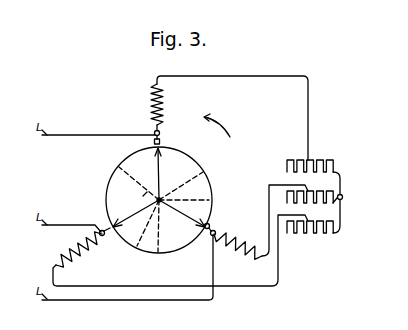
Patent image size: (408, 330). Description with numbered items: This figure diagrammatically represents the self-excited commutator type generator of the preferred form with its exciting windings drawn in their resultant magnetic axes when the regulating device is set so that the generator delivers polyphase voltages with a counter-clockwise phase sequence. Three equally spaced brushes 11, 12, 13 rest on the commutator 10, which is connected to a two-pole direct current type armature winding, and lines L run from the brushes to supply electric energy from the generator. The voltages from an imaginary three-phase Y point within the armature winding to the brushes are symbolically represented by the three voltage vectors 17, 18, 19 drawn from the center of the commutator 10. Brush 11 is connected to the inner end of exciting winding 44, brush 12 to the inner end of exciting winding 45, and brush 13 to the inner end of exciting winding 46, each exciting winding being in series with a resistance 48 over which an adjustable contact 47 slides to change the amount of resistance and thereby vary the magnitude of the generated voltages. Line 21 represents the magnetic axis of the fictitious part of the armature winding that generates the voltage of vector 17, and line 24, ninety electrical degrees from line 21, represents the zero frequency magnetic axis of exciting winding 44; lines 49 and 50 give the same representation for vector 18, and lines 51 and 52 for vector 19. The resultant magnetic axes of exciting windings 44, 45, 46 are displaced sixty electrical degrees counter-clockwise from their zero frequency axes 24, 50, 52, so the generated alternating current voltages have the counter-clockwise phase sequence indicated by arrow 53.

The commutator 10 is at (107, 194).
The brush 11 is at (160, 142).
The brush 12 is at (209, 226).
The brush 13 is at (104, 237).
The voltage vector 17 is at (159, 167).
The voltage vector 18 is at (141, 217).
The voltage vector 19 is at (185, 215).
The magnetic axis line 21 is at (141, 174).
The zero frequency magnetic axis line 24 is at (181, 184).
The exciting winding 44 is at (162, 121).
The exciting winding 45 is at (251, 246).
The exciting winding 46 is at (79, 254).
The adjustable contact 47 is at (309, 162).
The resistance 48 is at (311, 187).
The magnetic axis line 49 is at (146, 231).
The zero frequency magnetic axis line 50 is at (142, 195).
The magnetic axis line 51 is at (186, 202).
The zero frequency magnetic axis line 52 is at (162, 236).
The arrow 53 is at (217, 134).